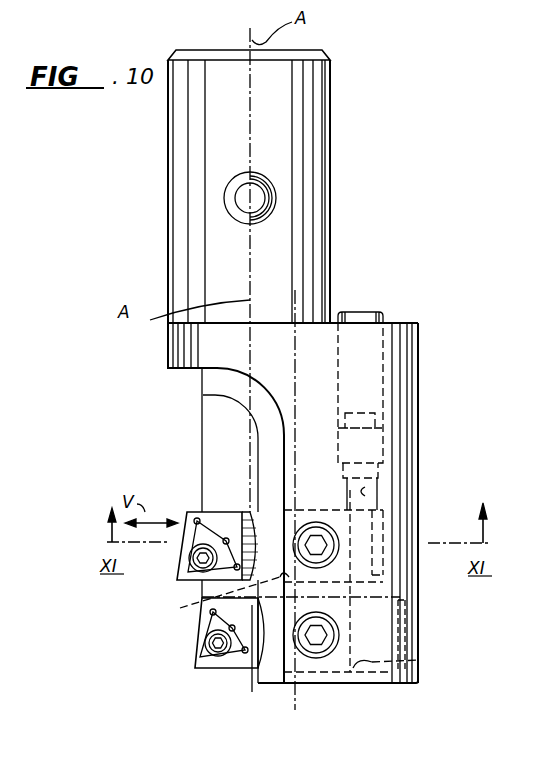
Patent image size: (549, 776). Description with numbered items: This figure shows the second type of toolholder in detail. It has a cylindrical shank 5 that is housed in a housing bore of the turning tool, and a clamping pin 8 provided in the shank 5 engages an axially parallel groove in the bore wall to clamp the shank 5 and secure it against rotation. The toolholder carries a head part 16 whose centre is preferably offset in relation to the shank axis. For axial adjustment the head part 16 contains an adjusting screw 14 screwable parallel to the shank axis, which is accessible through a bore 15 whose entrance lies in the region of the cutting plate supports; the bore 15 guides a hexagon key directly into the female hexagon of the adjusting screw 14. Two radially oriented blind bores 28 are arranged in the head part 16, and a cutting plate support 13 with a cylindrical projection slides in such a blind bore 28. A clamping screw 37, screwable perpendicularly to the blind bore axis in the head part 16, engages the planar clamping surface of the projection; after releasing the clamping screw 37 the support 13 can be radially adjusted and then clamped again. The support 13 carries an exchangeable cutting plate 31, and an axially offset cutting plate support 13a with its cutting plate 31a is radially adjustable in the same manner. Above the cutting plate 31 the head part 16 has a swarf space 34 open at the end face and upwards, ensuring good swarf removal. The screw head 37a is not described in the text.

The cylindrical shank 5 is at (308, 163).
The clamping pin 8 is at (268, 213).
The cutting plate support 13 is at (217, 527).
The axially offset cutting plate support 13a is at (252, 668).
The adjusting screw 14 is at (377, 312).
The bore 15 is at (381, 495).
The head part 16 is at (407, 387).
The blind bore 28 is at (463, 668).
The cutting plate 31 is at (190, 570).
The cutting plate 31a is at (200, 665).
The swarf space 34 is at (273, 440).
The clamping screw 37 is at (328, 559).
The screw head 37a is at (327, 552).